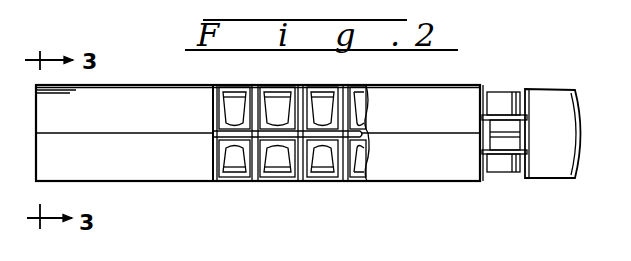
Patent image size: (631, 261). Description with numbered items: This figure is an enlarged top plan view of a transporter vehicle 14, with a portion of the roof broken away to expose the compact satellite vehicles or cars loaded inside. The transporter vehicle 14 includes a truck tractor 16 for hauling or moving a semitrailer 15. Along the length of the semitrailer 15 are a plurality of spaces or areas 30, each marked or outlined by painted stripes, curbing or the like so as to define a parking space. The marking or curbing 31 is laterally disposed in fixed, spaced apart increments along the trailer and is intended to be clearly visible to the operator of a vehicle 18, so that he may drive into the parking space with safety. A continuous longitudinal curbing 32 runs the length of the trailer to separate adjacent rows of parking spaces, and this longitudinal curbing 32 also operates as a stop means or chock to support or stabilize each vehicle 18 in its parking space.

The transporter vehicle 14 is at (460, 192).
The semitrailer 15 is at (158, 166).
The truck tractor 16 is at (545, 163).
The vehicle 18 is at (279, 163).
The parking space 30 is at (263, 181).
The marking or curbing 31 is at (302, 181).
The longitudinal curbing 32 is at (215, 132).